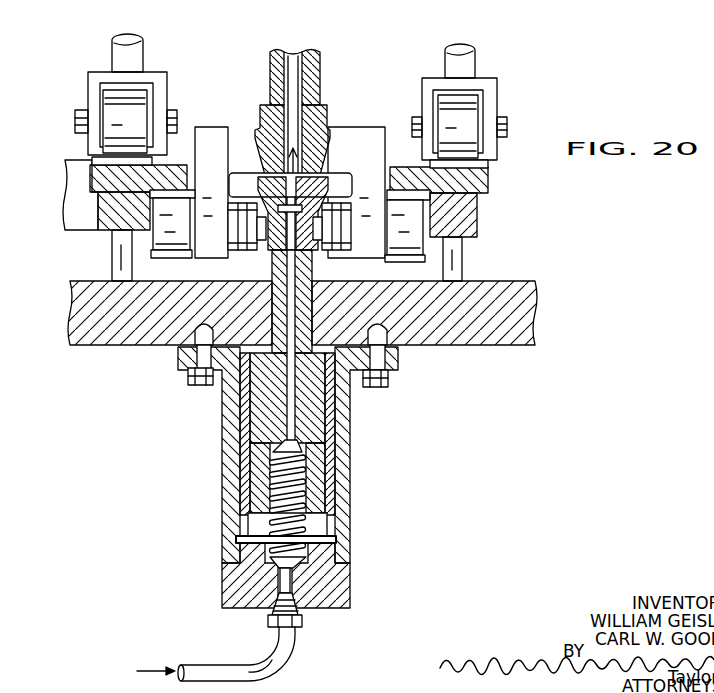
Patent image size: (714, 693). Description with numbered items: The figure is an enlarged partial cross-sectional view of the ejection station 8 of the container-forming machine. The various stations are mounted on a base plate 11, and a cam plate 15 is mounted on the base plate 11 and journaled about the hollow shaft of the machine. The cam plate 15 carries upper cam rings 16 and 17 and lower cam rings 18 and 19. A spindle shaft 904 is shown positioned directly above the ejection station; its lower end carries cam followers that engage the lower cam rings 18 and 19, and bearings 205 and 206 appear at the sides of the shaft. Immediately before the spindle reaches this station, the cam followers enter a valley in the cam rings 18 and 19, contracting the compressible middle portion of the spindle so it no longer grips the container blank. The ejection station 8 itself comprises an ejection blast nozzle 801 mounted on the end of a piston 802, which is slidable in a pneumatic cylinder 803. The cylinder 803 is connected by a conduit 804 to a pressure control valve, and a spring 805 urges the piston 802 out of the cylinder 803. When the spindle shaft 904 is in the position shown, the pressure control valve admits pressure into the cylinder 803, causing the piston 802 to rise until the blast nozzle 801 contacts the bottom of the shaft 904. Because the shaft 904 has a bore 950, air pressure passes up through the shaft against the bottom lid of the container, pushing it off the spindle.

The ejection station 8 is at (301, 502).
The base plate 11 is at (527, 292).
The cam plate 15 is at (58, 200).
The upper cam ring 16 is at (92, 159).
The upper cam ring 17 is at (483, 166).
The lower cam ring 18 is at (178, 194).
The lower cam ring 19 is at (479, 211).
The bearing 205 is at (177, 251).
The bearing 206 is at (396, 256).
The ejection blast nozzle 801 is at (328, 178).
The piston 802 is at (300, 320).
The pneumatic cylinder 803 is at (353, 429).
The conduit 804 is at (226, 668).
The spring 805 is at (301, 523).
The spindle shaft 904 is at (319, 63).
The bore 950 is at (300, 93).